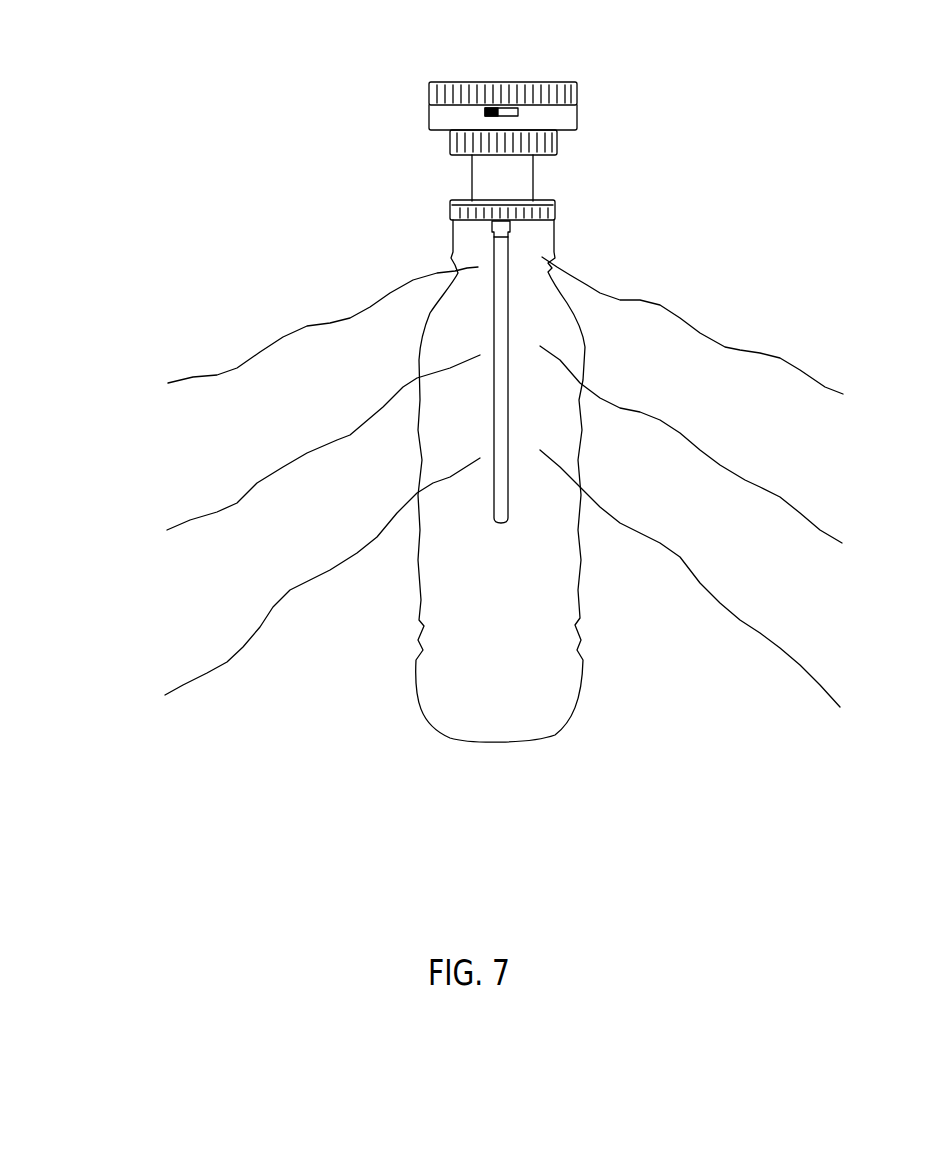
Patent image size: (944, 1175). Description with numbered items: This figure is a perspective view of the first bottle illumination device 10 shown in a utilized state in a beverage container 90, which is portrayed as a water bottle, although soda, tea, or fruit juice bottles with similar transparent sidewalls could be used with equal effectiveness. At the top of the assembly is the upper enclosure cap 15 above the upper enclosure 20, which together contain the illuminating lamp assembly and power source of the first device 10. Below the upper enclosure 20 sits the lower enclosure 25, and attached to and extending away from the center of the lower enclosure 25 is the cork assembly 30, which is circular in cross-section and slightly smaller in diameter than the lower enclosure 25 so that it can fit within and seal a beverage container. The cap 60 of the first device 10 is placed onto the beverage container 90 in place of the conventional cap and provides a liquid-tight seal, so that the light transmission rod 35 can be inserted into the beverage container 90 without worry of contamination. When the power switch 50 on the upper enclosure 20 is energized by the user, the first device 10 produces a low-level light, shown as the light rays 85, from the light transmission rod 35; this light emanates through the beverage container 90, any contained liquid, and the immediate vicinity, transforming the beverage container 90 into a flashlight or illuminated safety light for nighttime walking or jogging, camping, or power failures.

The first bottle illumination device 10 is at (157, 745).
The upper enclosure cap 15 is at (548, 82).
The upper enclosure 20 is at (566, 117).
The lower enclosure 25 is at (455, 143).
The cork assembly 30 is at (480, 182).
The light transmission rod 35 is at (505, 308).
The power switch 50 is at (486, 113).
The cap 60 is at (555, 205).
The light rays 85 is at (233, 505).
The beverage container 90 is at (418, 575).